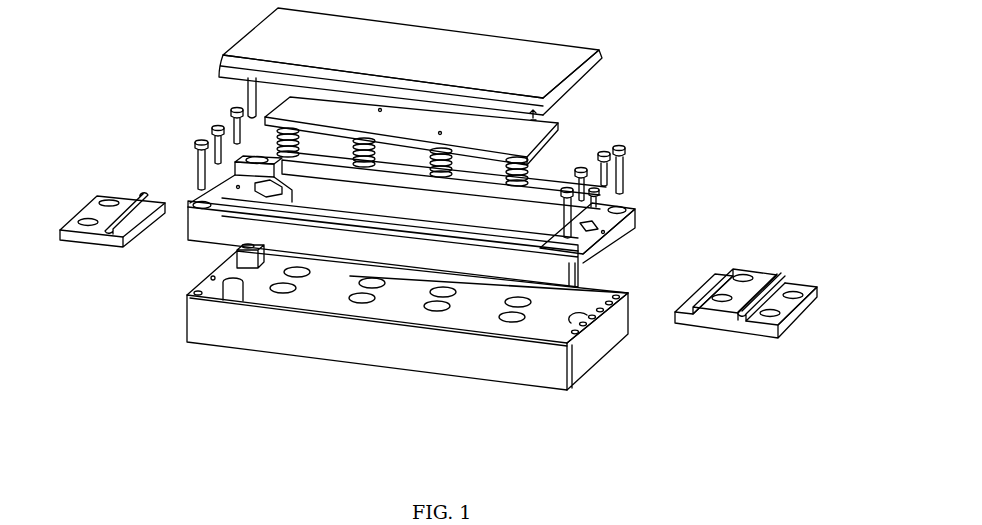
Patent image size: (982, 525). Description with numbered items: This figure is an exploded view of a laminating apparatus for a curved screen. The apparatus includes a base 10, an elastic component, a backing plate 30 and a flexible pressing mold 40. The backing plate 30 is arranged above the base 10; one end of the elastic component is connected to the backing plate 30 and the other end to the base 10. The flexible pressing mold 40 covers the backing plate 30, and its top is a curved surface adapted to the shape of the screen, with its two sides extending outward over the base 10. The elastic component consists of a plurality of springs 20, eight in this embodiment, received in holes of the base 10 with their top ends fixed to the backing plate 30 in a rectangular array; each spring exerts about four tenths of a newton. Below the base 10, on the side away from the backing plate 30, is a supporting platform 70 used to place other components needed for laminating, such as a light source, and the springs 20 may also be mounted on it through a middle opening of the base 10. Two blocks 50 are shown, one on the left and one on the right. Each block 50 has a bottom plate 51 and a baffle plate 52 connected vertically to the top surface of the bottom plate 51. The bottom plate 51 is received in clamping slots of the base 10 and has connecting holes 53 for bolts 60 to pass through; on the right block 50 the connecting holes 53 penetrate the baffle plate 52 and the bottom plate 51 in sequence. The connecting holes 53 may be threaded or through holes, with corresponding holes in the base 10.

The base 10 is at (605, 240).
The springs 20 is at (530, 163).
The backing plate 30 is at (558, 122).
The flexible pressing mold 40 is at (597, 68).
The block 50 is at (435, 287).
The bottom plate 51 is at (130, 238).
The baffle plate 52 is at (110, 235).
The connecting holes 53 is at (97, 193).
The bolts 60 is at (195, 152).
The supporting platform 70 is at (608, 338).